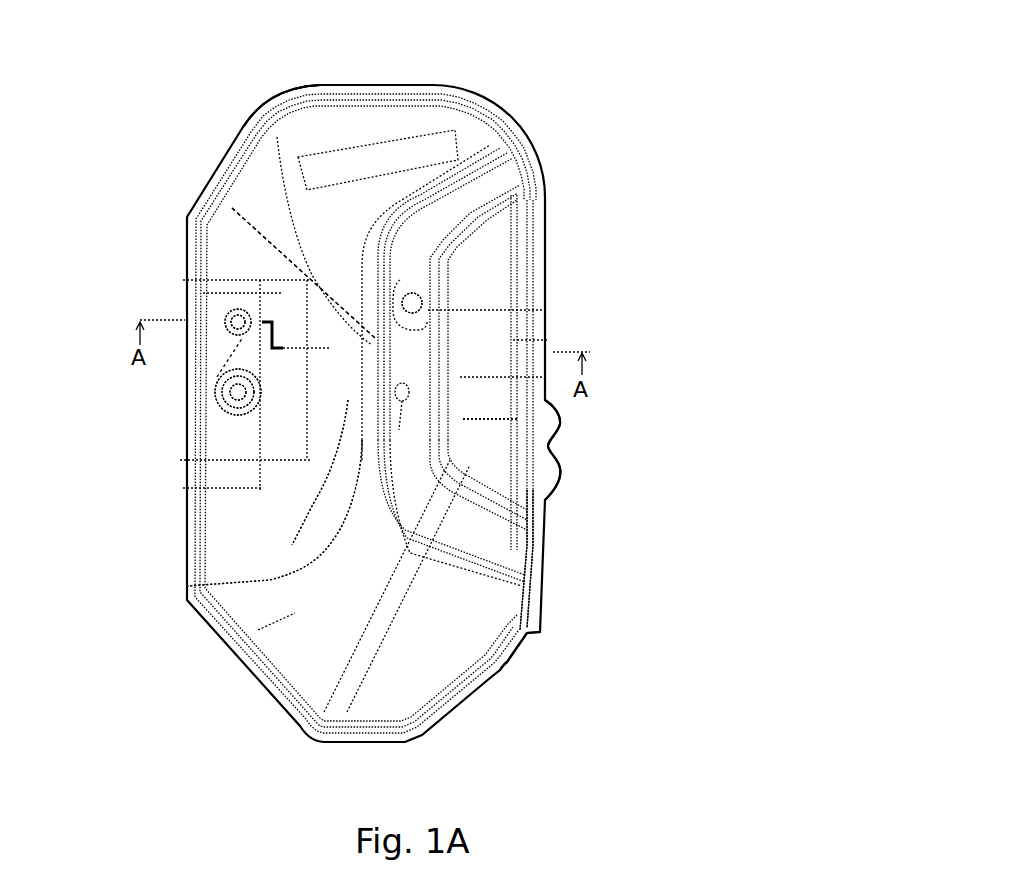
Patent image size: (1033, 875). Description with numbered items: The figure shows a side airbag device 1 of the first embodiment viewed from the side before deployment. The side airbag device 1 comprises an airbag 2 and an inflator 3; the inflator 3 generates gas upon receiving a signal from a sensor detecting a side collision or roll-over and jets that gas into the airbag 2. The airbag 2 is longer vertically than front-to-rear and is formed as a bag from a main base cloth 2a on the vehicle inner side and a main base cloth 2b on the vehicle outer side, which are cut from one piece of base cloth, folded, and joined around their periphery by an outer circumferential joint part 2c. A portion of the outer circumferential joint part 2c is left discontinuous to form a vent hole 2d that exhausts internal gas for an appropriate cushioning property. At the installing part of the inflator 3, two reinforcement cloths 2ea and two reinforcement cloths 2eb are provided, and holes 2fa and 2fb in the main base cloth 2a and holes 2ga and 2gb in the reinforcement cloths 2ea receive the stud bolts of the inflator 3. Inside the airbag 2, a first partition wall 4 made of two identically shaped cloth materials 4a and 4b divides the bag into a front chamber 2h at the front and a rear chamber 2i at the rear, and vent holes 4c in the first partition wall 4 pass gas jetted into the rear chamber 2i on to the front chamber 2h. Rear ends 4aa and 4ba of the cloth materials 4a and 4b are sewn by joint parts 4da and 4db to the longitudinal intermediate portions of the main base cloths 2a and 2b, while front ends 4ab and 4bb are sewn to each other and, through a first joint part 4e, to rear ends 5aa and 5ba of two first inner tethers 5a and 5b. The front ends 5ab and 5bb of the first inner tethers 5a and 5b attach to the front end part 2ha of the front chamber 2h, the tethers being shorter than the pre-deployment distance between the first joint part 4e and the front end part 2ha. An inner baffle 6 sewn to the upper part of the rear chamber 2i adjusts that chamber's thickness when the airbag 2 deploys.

The side airbag device 1 is at (570, 95).
The airbag 2 is at (468, 694).
The main base cloth 2a is at (440, 723).
The main base cloth 2b is at (440, 723).
The outer circumferential joint part 2c is at (398, 105).
The vent hole 2d is at (557, 443).
The reinforcement cloth 2ea is at (232, 208).
The reinforcement cloth 2eb is at (232, 208).
The hole 2fa is at (205, 277).
The hole 2fb is at (215, 385).
The hole 2ga is at (205, 277).
The hole 2gb is at (215, 385).
The front chamber 2h is at (483, 272).
The front end part 2ha is at (548, 335).
The rear chamber 2i is at (258, 630).
The inflator 3 is at (183, 488).
The first partition wall 4 is at (662, 575).
The cloth material 4a is at (518, 551).
The cloth material 4b is at (518, 551).
The one end of cloth material 4aa is at (337, 432).
The other end of cloth material 4ab is at (548, 406).
The one end of cloth material 4ba is at (337, 432).
The other end of cloth material 4bb is at (548, 406).
The vent hole 4c is at (403, 425).
The joint part 4da is at (220, 586).
The joint part 4db is at (220, 586).
The first joint part 4e is at (300, 733).
The first inner tether 5a is at (513, 334).
The first inner tether 5b is at (513, 334).
The one end of first inner tether 5aa is at (250, 106).
The other end of first inner tether 5ab is at (546, 310).
The one end of first inner tether 5ba is at (250, 106).
The other end of first inner tether 5bb is at (546, 310).
The inner baffle 6 is at (338, 185).